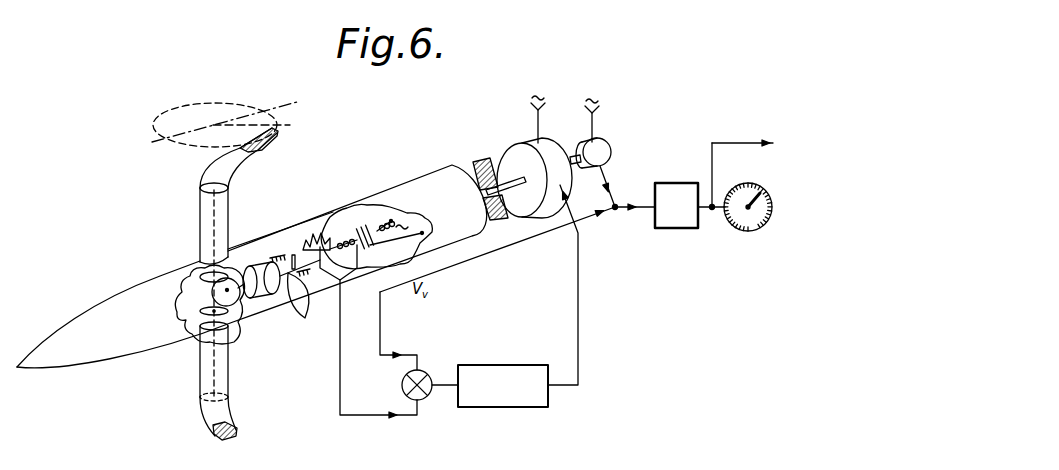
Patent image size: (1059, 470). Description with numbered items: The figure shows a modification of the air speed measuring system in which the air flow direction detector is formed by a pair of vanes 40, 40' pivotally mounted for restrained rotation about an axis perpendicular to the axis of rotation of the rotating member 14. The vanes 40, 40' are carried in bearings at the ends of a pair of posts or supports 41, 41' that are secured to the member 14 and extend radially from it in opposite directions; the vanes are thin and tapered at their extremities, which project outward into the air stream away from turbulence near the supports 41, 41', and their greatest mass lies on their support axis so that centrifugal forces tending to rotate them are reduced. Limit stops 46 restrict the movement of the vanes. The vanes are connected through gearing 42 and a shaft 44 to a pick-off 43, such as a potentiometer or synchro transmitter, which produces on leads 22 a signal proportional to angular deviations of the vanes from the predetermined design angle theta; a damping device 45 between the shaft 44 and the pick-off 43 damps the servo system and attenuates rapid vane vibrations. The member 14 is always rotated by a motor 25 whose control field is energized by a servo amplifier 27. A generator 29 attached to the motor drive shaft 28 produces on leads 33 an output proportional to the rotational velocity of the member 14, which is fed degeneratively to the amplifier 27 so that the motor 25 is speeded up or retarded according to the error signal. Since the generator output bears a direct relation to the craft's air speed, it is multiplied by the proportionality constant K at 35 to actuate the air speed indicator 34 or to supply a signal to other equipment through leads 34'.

The rotating member 14 is at (418, 179).
The leads 22 is at (338, 376).
The motor 25 is at (527, 138).
The servo amplifier 27 is at (508, 366).
The motor drive shaft 28 is at (506, 148).
The generator 29 is at (606, 141).
The leads 33 is at (487, 253).
The air speed indicator 34 is at (748, 229).
The leads 34' is at (742, 159).
The proportionality constant multiplier 35 is at (673, 230).
The vane 40 is at (244, 158).
The vane 40' is at (241, 418).
The post or support 41 is at (191, 290).
The post or support 41' is at (190, 361).
The gearing 42 is at (233, 327).
The pick-off 43 is at (332, 218).
The shaft 44 is at (253, 300).
The damping device 45 is at (267, 241).
The limit stops 46 is at (310, 309).